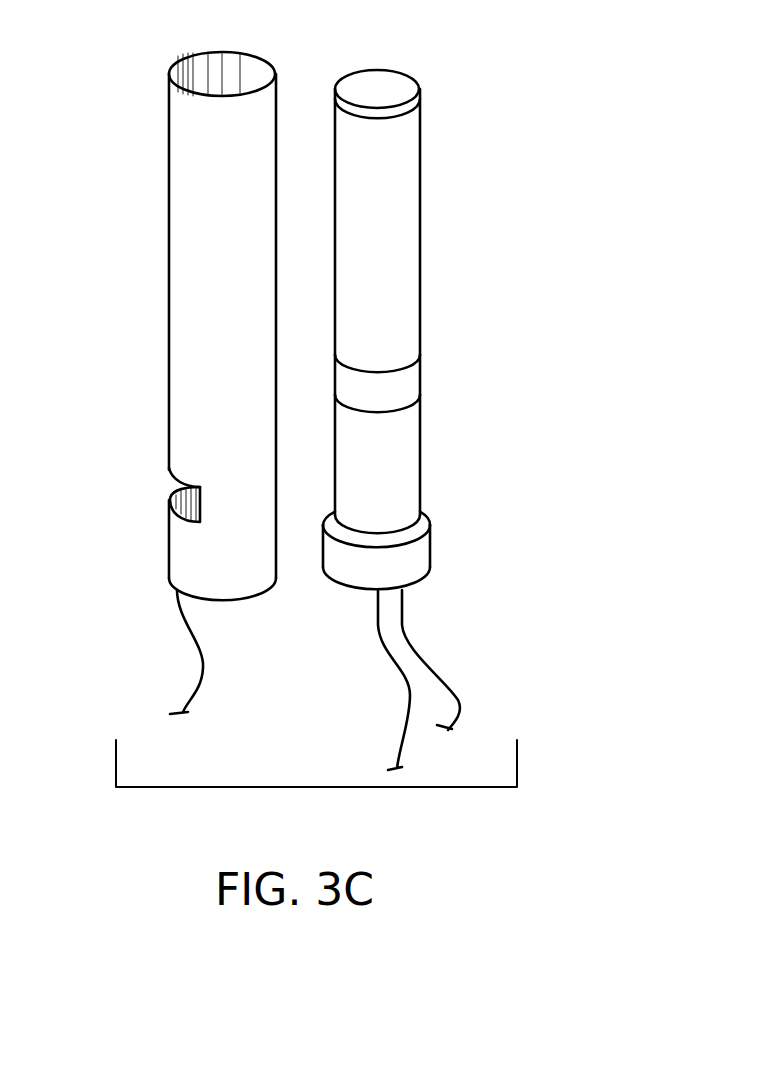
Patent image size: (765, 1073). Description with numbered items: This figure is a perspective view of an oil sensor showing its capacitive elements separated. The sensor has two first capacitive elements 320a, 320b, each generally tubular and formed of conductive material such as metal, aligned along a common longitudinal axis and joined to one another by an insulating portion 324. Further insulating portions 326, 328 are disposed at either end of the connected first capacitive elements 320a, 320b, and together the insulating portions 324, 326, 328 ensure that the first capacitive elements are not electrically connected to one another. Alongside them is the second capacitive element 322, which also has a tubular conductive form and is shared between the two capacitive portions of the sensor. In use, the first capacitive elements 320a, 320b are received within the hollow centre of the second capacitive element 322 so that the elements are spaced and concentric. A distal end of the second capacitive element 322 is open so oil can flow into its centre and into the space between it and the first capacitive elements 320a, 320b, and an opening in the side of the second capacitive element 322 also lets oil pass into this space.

The second capacitive element 322 is at (196, 161).
The first capacitive element 320a is at (400, 187).
The first capacitive element 320b is at (400, 459).
The insulating portion 324 is at (400, 388).
The insulating portion 326 is at (412, 560).
The insulating portion 328 is at (377, 90).